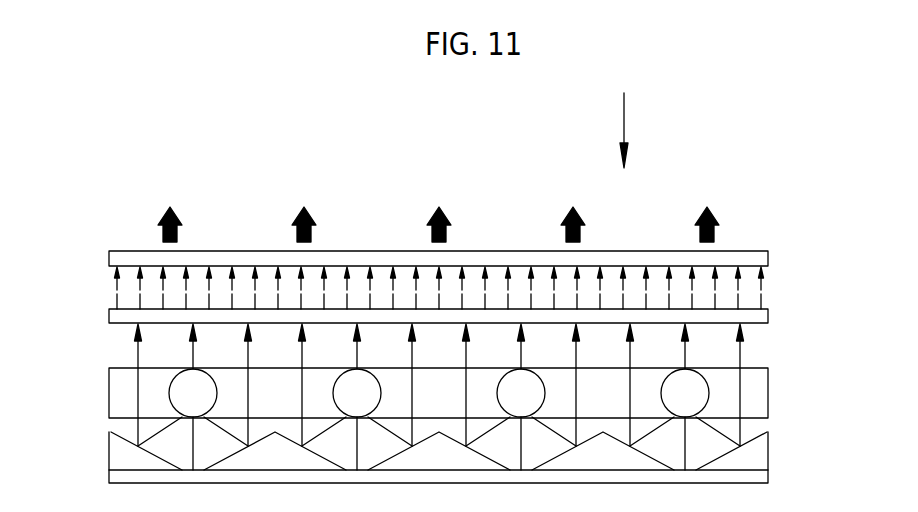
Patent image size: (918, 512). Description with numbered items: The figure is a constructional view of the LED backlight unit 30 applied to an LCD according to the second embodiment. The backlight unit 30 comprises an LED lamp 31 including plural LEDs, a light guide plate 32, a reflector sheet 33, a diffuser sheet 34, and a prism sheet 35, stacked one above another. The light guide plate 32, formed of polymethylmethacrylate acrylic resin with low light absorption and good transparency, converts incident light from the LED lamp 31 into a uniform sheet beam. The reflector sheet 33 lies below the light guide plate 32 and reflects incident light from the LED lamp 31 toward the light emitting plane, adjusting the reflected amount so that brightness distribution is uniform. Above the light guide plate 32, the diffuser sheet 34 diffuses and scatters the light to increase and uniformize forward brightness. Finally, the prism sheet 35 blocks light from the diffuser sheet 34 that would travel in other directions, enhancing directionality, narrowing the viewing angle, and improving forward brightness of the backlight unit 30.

The backlight unit 30 is at (110, 206).
The LED lamp 31 is at (777, 348).
The light guide plate 32 is at (768, 392).
The reflector sheet 33 is at (768, 480).
The diffuser sheet 34 is at (768, 318).
The prism sheet 35 is at (768, 259).